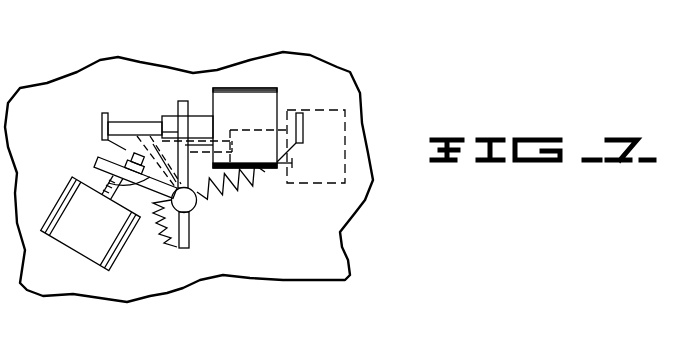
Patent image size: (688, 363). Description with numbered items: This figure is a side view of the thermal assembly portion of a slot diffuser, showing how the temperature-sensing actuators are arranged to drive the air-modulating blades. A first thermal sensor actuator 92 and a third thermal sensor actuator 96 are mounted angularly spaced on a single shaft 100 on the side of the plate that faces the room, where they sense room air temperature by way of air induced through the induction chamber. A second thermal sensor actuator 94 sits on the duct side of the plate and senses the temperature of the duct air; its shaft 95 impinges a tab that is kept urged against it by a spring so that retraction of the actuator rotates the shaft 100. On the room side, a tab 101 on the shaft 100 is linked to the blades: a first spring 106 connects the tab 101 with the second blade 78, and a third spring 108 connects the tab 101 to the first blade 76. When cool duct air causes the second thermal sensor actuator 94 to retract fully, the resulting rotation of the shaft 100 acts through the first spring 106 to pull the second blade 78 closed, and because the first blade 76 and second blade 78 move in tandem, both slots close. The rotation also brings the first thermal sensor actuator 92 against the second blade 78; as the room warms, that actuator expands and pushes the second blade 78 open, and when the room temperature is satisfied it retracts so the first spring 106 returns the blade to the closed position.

The first blade 76 is at (105, 113).
The second blade 78 is at (299, 113).
The first thermal sensor actuator 92 is at (105, 253).
The second thermal sensor actuator 94 is at (333, 165).
The shaft 95 is at (200, 148).
The third thermal sensor actuator 96 is at (247, 91).
The shaft 100 is at (190, 205).
The tab 101 is at (184, 249).
The first spring 106 is at (257, 196).
The third spring 108 is at (106, 177).